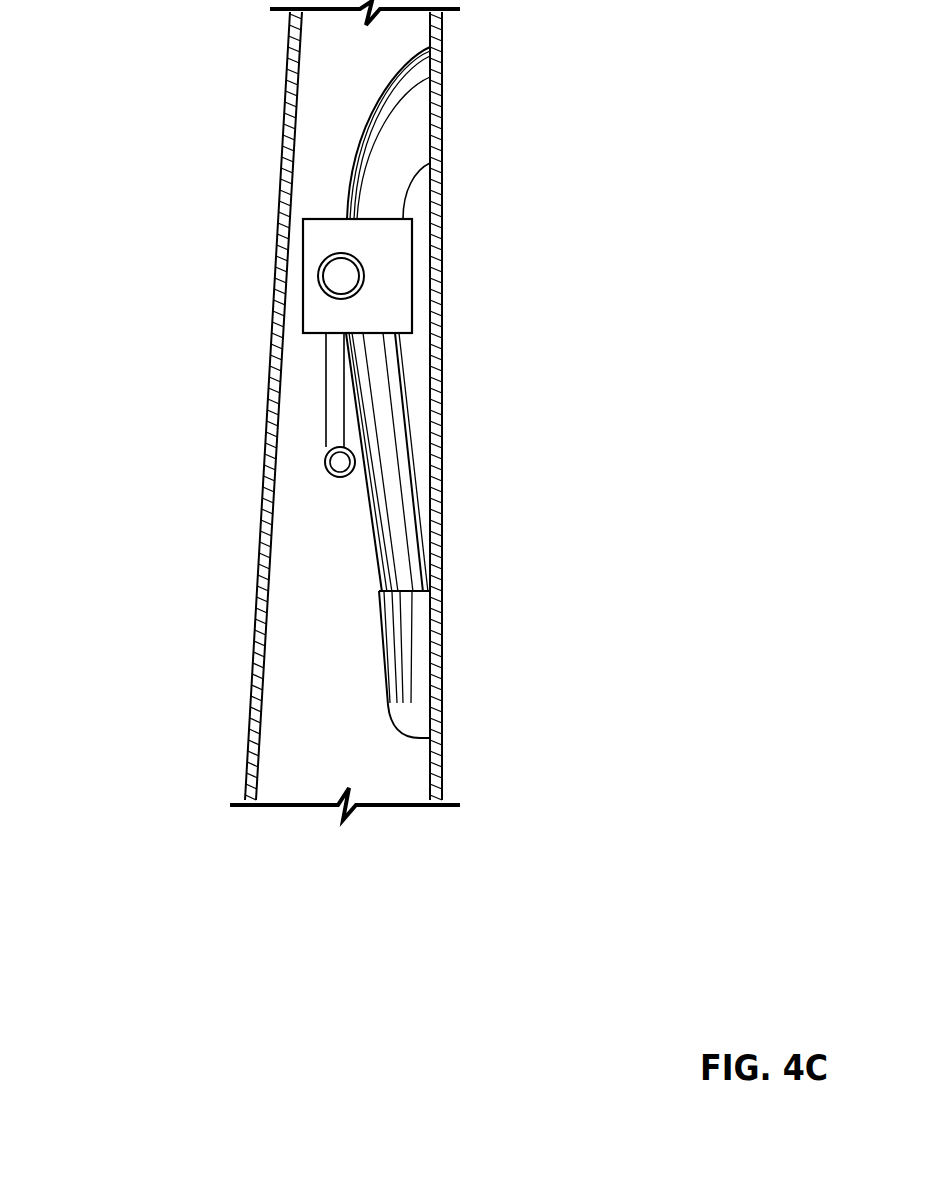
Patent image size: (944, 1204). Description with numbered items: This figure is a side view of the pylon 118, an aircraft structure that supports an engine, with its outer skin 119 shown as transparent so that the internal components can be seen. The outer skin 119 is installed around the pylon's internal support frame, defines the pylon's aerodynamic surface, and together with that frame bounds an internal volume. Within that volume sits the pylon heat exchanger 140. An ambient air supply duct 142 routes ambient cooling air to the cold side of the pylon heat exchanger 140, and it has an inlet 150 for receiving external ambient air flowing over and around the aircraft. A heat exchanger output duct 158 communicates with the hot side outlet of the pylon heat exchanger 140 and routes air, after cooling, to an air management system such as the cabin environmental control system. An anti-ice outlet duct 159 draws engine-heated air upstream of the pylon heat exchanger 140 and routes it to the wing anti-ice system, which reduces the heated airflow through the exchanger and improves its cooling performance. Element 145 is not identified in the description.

The pylon 118 is at (491, 316).
The outer skin 119 is at (283, 128).
The pylon heat exchanger 140 is at (313, 318).
The ambient air supply duct 142 is at (385, 375).
The curved distal tip 145 is at (424, 140).
The inlet 150 is at (422, 628).
The heat exchanger output duct 158 is at (341, 276).
The anti-ice outlet duct 159 is at (337, 463).